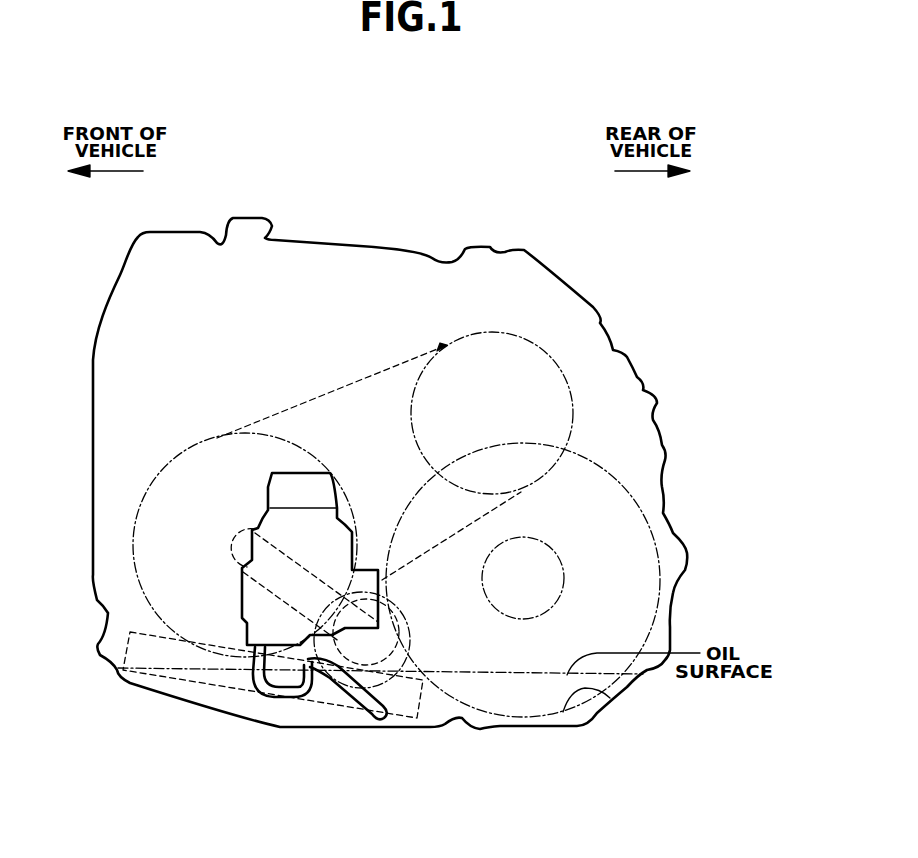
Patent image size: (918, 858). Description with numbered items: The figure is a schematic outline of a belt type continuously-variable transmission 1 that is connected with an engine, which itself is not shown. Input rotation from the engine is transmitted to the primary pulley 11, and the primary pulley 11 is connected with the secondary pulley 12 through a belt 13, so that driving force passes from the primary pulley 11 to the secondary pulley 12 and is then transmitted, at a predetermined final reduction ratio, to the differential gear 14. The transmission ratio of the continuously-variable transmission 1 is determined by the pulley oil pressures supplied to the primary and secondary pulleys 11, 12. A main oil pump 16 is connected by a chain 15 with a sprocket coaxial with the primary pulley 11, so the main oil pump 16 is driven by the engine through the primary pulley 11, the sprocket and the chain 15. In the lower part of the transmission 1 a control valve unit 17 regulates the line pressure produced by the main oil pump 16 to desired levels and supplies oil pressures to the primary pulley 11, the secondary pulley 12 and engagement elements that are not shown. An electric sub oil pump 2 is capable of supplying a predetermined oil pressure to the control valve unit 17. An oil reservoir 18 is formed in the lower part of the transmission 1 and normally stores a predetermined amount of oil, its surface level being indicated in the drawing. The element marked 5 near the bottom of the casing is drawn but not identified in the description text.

The belt type continuously-variable transmission 1 is at (568, 268).
The electric sub oil pump 2 is at (256, 516).
The oil strainer pipe 5 is at (277, 699).
The primary pulley 11 is at (162, 467).
The secondary pulley 12 is at (490, 333).
The belt 13 is at (343, 386).
The differential gear 14 is at (633, 497).
The chain 15 is at (313, 567).
The main oil pump 16 is at (403, 617).
The control valve unit 17 is at (170, 682).
The oil reservoir 18 is at (665, 598).